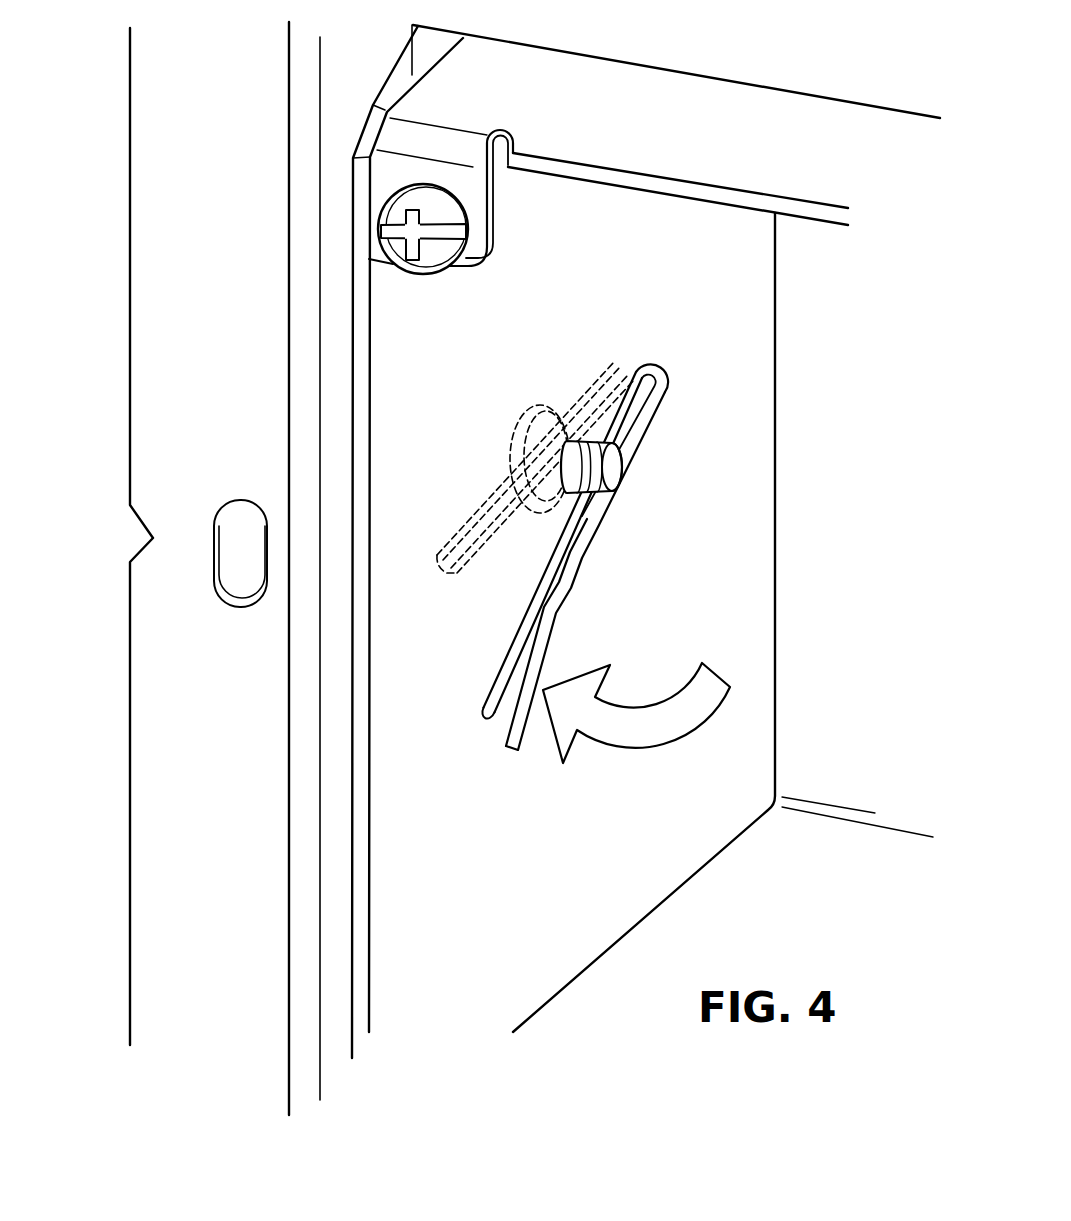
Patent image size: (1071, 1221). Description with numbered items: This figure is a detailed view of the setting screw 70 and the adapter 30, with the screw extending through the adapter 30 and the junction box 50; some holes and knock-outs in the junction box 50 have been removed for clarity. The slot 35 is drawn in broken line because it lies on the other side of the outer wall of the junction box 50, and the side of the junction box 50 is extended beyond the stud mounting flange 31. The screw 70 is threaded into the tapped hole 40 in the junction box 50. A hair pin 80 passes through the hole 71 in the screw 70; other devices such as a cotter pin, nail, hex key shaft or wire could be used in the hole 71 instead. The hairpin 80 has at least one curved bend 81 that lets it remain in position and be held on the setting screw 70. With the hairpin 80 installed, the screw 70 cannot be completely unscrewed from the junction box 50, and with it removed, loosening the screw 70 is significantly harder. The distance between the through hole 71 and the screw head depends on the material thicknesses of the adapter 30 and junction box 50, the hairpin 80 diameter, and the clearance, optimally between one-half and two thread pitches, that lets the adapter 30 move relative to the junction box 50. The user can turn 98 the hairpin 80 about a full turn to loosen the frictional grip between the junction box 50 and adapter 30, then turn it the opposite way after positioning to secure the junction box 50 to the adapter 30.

The adapter 30 is at (108, 143).
The stud mounting flange 31 is at (243, 758).
The slot 35 is at (437, 565).
The tapped hole 40 is at (572, 457).
The junction box 50 is at (812, 582).
The setting screw 70 is at (565, 427).
The through hole 71 is at (567, 478).
The hair pin 80 is at (483, 708).
The curved bend 81 is at (567, 590).
The turn 98 is at (630, 748).